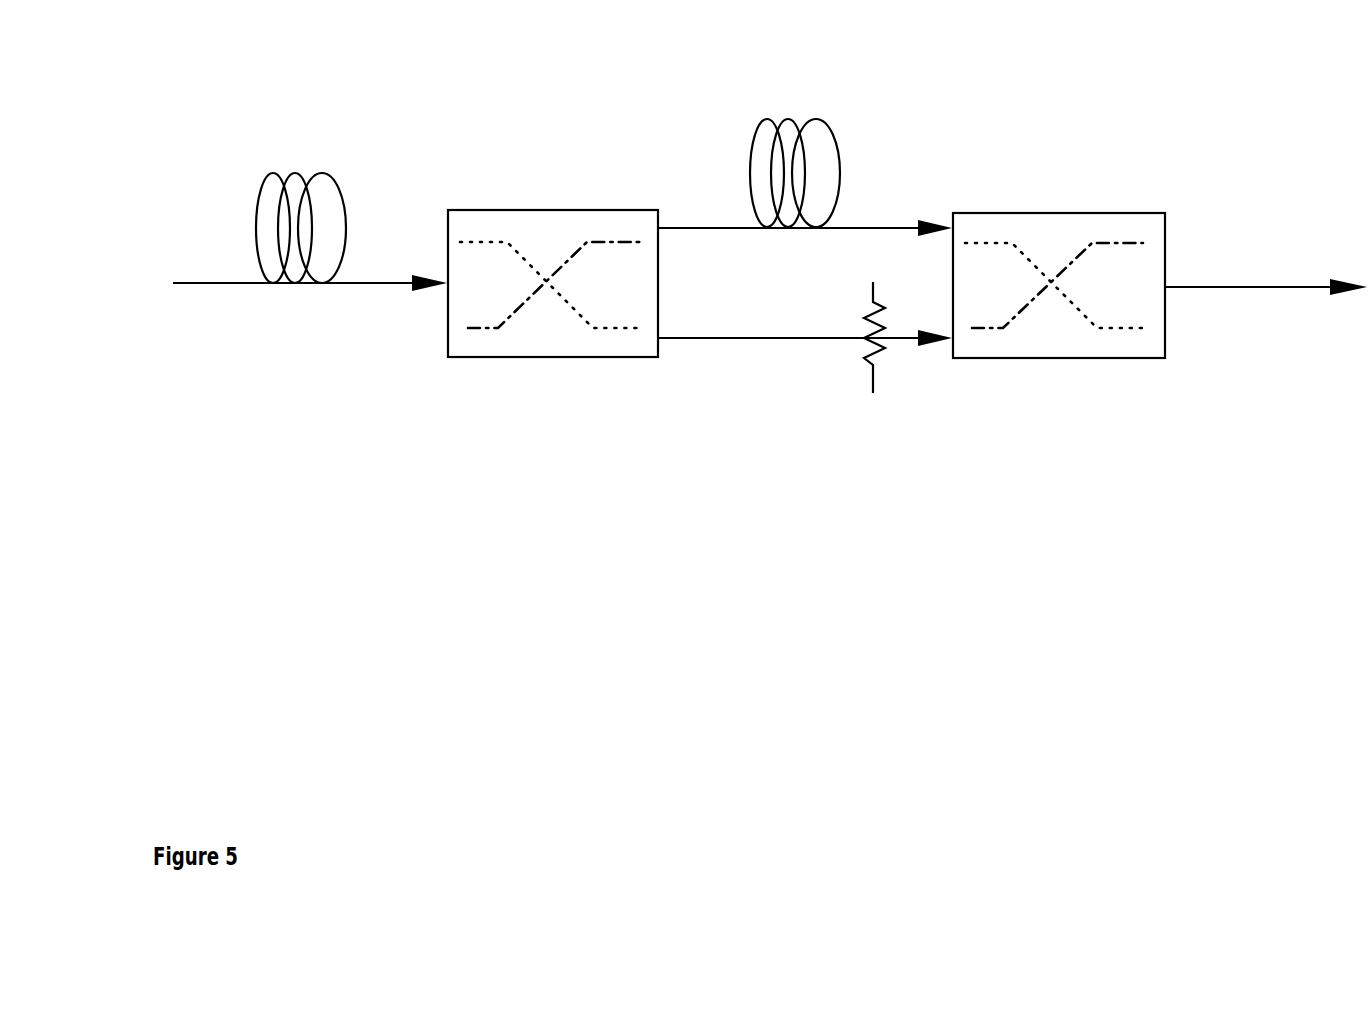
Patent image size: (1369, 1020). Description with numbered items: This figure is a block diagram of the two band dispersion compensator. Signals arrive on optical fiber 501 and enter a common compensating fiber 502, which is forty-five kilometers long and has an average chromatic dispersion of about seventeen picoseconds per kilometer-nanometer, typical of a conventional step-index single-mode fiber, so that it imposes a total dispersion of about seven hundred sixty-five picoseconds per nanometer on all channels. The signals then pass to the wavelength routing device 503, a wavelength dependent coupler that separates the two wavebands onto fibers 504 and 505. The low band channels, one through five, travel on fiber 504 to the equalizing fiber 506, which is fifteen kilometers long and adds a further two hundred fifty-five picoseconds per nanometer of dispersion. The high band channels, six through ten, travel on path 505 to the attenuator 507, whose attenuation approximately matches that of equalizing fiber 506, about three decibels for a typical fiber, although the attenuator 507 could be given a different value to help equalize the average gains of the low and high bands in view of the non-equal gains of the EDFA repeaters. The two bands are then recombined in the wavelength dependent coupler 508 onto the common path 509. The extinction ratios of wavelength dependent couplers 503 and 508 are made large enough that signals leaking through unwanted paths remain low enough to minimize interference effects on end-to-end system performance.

The optical fiber 501 is at (205, 284).
The common compensating fiber 502 is at (253, 205).
The wavelength routing device 503 is at (545, 208).
The fiber 504 is at (687, 226).
The fiber 505 is at (710, 336).
The equalizing fiber 506 is at (842, 147).
The attenuator 507 is at (877, 385).
The wavelength dependent coupler 508 is at (1058, 212).
The common path 509 is at (1250, 286).